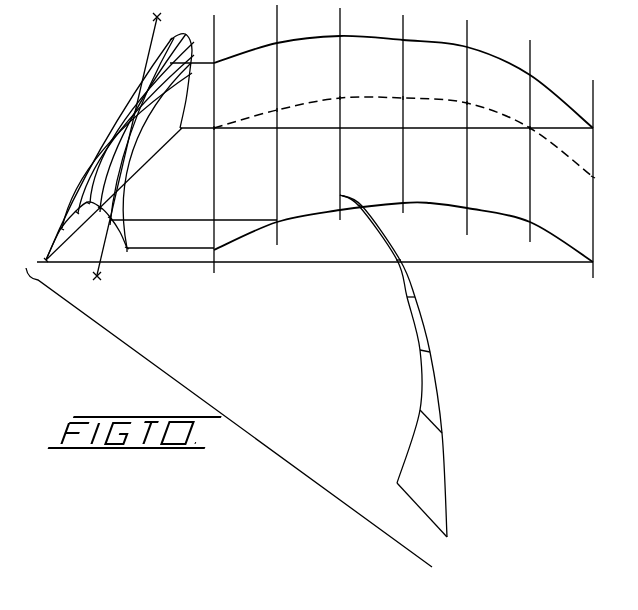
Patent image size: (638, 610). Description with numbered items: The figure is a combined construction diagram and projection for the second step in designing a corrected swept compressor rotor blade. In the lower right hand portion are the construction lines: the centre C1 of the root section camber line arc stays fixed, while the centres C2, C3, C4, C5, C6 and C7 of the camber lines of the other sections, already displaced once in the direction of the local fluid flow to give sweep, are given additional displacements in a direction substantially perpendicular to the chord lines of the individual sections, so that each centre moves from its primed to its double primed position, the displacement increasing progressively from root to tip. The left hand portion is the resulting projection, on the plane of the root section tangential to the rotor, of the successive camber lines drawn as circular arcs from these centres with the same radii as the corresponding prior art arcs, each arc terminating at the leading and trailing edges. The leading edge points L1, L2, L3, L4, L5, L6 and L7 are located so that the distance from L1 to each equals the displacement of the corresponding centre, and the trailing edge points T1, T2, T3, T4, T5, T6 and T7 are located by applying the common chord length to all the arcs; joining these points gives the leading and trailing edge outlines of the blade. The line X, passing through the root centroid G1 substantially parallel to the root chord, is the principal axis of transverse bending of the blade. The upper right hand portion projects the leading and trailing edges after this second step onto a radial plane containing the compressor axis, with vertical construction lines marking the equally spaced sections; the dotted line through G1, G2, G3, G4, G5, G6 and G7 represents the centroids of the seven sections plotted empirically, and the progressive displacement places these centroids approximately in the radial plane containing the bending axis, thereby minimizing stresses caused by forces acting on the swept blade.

The leading edge point of root section L1 is at (199, 144).
The leading edge point of section two L2 is at (227, 125).
The leading edge point of section three L3 is at (267, 114).
The leading edge point of section four L4 is at (305, 114).
The leading edge point of section five L5 is at (338, 127).
The leading edge point of section six L6 is at (369, 141).
The leading edge point of tip section L7 is at (327, 179).
The centroid of root section G1 is at (222, 138).
The centroid of section two G2 is at (269, 118).
The centroid of section three G3 is at (331, 107).
The centroid of section four G4 is at (394, 107).
The centroid of section five G5 is at (457, 111).
The centroid of section six G6 is at (522, 136).
The centroid of tip section G7 is at (587, 185).
The trailing edge point of root section T1 is at (175, 256).
The trailing edge point of section two T2 is at (199, 227).
The trailing edge point of section three T3 is at (225, 216).
The trailing edge point of section four T4 is at (251, 212).
The trailing edge point of section five T5 is at (275, 220).
The trailing edge point of section six T6 is at (299, 236).
The trailing edge point of tip section T7 is at (325, 268).
The centre of root camber line arc C1 is at (386, 362).
The centre of camber line arc two C2 is at (374, 215).
The centre of camber line arc three C3 is at (398, 265).
The centre of camber line arc four C4 is at (410, 297).
The centre of camber line arc five C5 is at (424, 351).
The centre of camber line arc six C6 is at (430, 424).
The centre of camber line arc seven C7 is at (423, 516).
The principal axis of transverse bending X is at (127, 146).